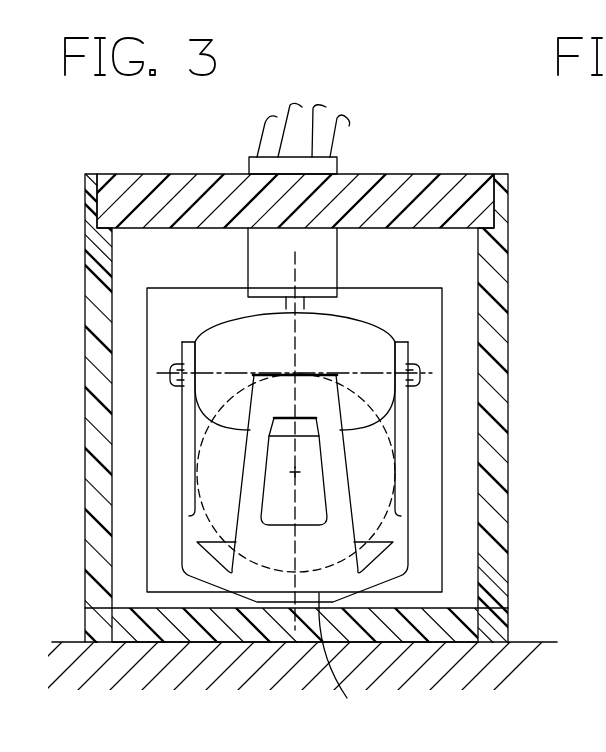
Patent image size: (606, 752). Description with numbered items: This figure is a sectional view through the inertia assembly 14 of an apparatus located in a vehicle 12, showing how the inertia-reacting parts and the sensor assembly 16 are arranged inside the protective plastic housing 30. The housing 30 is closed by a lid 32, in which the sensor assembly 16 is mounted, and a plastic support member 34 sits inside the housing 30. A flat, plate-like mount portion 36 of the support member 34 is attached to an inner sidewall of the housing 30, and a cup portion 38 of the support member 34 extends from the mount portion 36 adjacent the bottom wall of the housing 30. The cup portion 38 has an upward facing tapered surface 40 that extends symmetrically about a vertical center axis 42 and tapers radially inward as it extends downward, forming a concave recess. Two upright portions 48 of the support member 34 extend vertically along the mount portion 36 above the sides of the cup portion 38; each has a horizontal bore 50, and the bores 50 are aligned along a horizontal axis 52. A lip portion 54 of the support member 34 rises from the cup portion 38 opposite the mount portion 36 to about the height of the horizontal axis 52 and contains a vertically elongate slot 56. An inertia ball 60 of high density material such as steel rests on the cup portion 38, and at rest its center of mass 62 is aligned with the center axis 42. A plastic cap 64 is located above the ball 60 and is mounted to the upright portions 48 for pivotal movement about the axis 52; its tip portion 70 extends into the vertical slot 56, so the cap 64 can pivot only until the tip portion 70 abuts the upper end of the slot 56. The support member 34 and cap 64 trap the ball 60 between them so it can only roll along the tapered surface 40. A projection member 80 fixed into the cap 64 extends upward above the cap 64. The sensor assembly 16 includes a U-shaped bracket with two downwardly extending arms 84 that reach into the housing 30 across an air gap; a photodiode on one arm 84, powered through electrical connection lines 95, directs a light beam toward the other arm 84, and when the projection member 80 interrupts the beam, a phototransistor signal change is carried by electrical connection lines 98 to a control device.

The vehicle 12 is at (522, 640).
The inertia assembly 14 is at (303, 375).
The sensor assembly 16 is at (339, 125).
The housing 30 is at (498, 345).
The lid 32 is at (176, 186).
The support member 34 is at (456, 552).
The mount portion 36 is at (421, 293).
The cup portion 38 is at (342, 660).
The tapered surface 40 is at (297, 454).
The center axis 42 is at (296, 344).
The upright portions 48 is at (189, 342).
The bore 50 is at (181, 388).
The horizontal axis 52 is at (420, 374).
The lip portion 54 is at (295, 474).
The vertical slot 56 is at (301, 523).
The inertia ball 60 is at (220, 468).
The center of mass 62 is at (292, 473).
The cap 64 is at (300, 361).
The tip portion 70 is at (285, 424).
The projection member 80 is at (290, 303).
The arms 84 is at (248, 257).
The electrical connection lines 95 is at (318, 128).
The electrical connection lines 98 is at (266, 128).